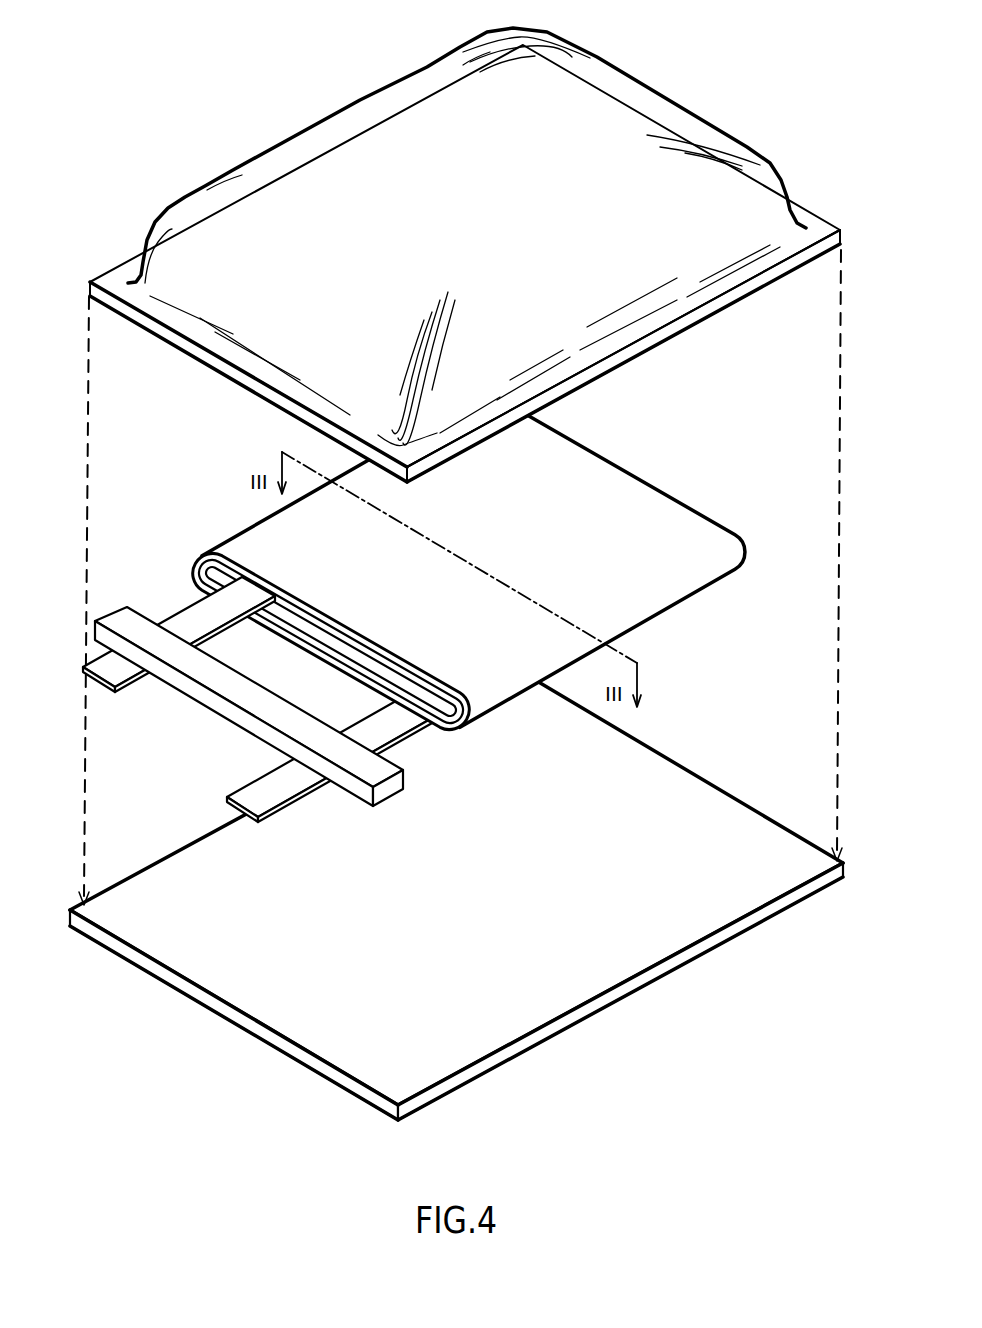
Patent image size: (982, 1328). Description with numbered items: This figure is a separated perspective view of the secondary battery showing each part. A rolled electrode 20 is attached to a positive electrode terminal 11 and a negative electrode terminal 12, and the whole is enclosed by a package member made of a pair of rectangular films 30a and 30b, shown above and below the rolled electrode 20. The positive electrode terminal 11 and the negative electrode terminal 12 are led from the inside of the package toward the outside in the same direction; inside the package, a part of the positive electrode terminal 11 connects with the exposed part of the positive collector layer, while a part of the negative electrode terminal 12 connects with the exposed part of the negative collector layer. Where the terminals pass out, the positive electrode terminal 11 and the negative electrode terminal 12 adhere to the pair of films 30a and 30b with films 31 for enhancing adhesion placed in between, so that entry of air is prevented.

The rectangular film 30a is at (623, 90).
The rectangular film 30b is at (662, 777).
The rolled electrode 20 is at (586, 491).
The positive electrode terminal 11 is at (182, 622).
The negative electrode terminal 12 is at (260, 792).
The film for enhancing adhesion 31 is at (115, 620).